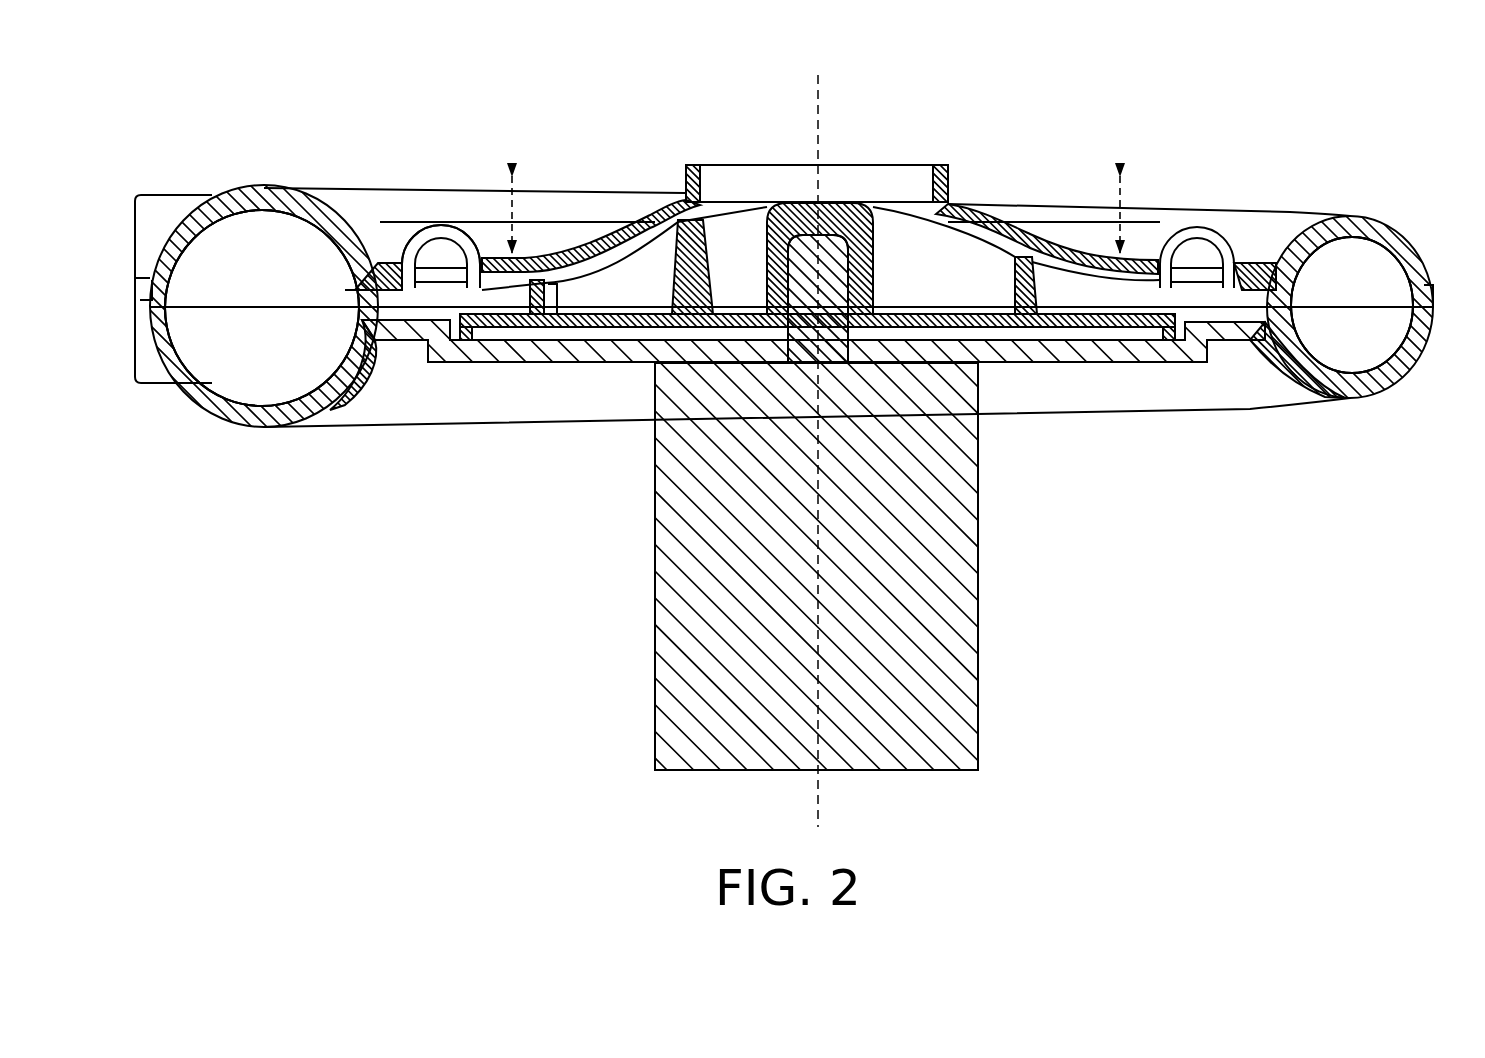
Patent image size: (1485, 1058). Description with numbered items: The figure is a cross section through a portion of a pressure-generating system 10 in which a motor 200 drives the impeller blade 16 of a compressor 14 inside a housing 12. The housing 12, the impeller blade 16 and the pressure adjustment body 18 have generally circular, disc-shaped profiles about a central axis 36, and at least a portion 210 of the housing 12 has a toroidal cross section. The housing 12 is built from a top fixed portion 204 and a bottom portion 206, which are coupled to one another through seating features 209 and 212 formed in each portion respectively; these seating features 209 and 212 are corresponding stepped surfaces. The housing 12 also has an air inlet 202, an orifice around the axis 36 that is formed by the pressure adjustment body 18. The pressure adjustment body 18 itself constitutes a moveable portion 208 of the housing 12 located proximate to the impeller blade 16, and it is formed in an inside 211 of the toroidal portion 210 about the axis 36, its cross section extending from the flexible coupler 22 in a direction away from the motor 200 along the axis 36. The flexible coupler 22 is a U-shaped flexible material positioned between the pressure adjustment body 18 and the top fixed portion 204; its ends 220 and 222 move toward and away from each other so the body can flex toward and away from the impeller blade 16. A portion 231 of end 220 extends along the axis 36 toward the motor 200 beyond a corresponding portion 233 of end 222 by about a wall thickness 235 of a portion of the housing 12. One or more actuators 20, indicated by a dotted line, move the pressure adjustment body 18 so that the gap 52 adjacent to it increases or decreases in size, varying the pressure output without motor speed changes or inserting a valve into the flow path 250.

The system 10 is at (185, 125).
The housing 12 is at (1286, 199).
The compressor 14 is at (573, 186).
The impeller blade 16 is at (1023, 328).
The pressure adjustment body 18 is at (1014, 221).
The actuator 20 is at (514, 165).
The flexible coupler 22 is at (1141, 221).
The axis 36 is at (814, 288).
The gap 52 is at (968, 268).
The motor 200 is at (654, 685).
The air inlet 202 is at (812, 156).
The top fixed portion 204 is at (248, 182).
The bottom portion 206 is at (1301, 392).
The moveable portion 208 is at (1014, 221).
The seating feature 209 is at (178, 284).
The toroidal portion 210 is at (200, 318).
The inside 211 is at (415, 138).
The seating feature 212 is at (142, 298).
The end 220 is at (409, 292).
The end 222 is at (471, 282).
The portion of end 231 is at (404, 243).
The corresponding portion of end 233 is at (466, 250).
The wall thickness 235 is at (340, 226).
The flow path 250 is at (259, 385).